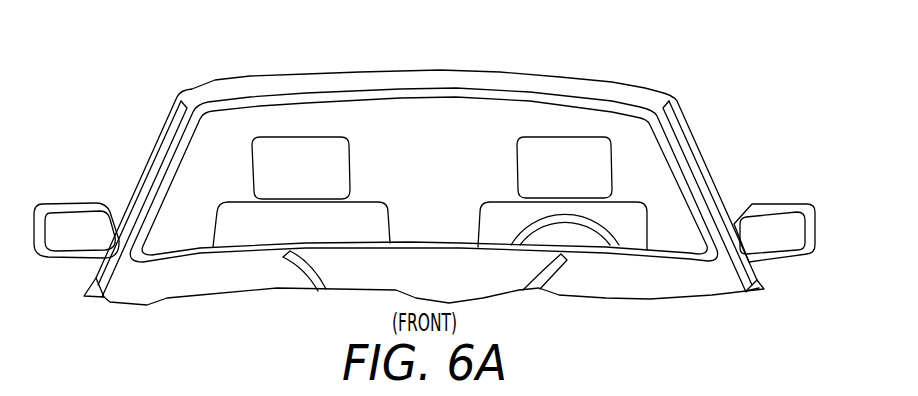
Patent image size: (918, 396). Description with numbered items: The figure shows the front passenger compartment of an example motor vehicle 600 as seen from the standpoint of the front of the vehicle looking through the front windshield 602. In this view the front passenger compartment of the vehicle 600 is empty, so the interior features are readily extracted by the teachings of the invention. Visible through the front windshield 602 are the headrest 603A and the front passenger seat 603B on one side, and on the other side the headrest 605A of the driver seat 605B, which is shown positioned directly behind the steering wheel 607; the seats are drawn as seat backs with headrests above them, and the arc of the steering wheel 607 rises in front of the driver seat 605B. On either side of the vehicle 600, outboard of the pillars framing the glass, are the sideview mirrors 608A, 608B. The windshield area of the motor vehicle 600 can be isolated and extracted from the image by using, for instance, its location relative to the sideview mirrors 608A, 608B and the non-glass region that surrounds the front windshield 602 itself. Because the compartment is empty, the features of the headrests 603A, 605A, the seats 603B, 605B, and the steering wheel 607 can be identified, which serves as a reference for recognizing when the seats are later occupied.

The vehicle 600 is at (277, 73).
The front windshield 602 is at (216, 142).
The headrest 603A is at (343, 138).
The front passenger seat 603B is at (374, 201).
The headrest 605A is at (520, 138).
The driver seat 605B is at (499, 201).
The steering wheel 607 is at (603, 226).
The sideview mirror 608A is at (72, 203).
The sideview mirror 608B is at (777, 203).